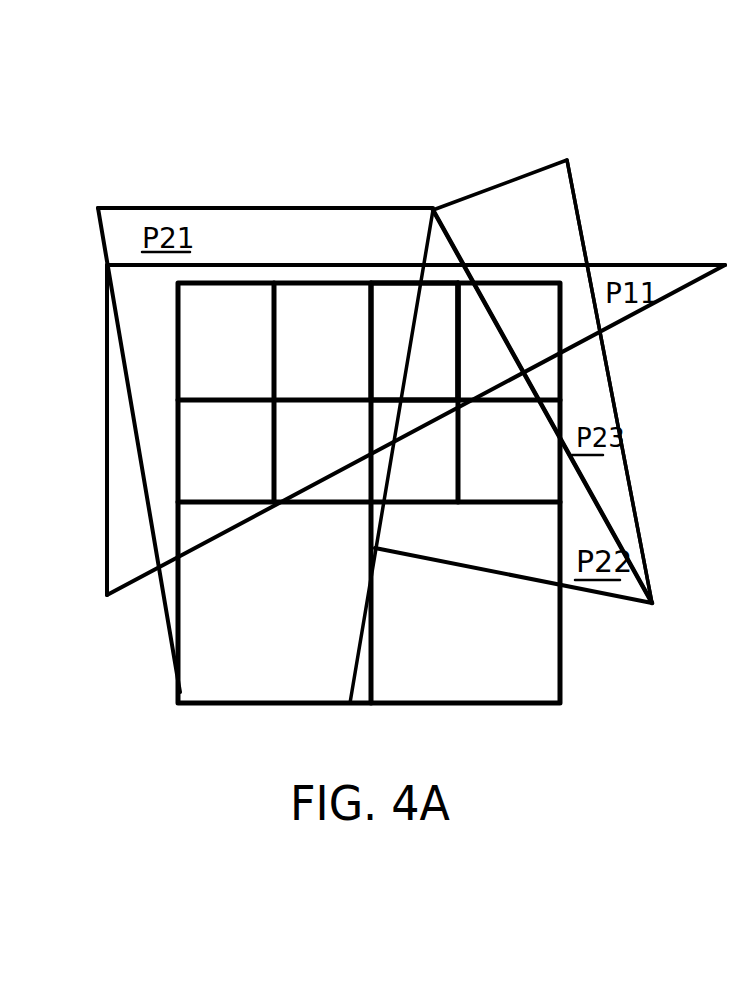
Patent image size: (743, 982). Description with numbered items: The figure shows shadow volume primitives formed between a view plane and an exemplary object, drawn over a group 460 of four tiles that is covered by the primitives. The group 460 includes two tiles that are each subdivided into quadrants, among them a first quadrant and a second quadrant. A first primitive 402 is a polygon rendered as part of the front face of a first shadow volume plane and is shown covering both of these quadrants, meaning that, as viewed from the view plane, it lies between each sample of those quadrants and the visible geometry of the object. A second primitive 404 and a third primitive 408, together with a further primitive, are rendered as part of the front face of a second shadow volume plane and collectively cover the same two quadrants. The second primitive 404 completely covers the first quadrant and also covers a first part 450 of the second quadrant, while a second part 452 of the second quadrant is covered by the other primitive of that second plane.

The primitive P11 402 is at (640, 273).
The primitive P21 404 is at (328, 207).
The primitive P23 408 is at (625, 463).
The first part of Q2 450 is at (411, 320).
The second part of Q2 452 is at (453, 320).
The group of four tiles 460 is at (562, 703).